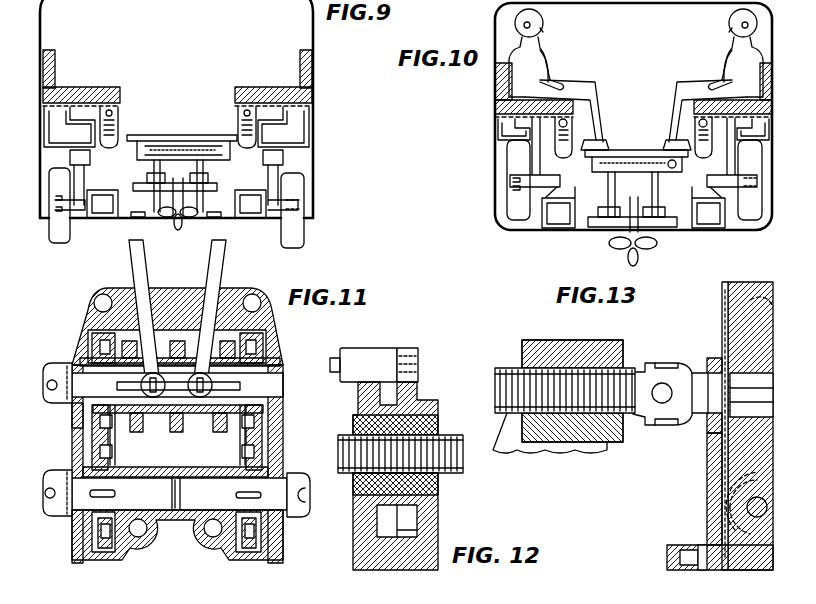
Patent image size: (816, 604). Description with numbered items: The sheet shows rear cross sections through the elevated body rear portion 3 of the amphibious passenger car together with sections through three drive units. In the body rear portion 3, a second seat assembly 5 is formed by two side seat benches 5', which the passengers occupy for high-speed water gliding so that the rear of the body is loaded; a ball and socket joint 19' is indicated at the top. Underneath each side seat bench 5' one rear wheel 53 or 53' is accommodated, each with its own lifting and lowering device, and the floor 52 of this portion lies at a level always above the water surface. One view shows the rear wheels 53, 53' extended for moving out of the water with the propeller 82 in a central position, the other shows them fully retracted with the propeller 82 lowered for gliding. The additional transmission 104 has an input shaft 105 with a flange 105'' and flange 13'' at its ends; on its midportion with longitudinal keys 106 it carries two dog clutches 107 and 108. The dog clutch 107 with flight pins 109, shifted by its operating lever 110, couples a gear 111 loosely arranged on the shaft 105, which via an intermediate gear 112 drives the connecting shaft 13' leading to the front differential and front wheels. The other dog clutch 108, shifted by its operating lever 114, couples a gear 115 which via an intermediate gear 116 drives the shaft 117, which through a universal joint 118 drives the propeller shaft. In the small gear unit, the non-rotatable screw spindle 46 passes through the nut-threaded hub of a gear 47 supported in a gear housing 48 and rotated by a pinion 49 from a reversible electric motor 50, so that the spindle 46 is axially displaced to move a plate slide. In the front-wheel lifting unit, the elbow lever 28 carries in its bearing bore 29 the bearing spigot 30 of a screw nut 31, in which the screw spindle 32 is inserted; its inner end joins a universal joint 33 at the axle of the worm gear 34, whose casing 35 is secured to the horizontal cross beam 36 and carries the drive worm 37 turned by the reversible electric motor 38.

In FIG. 10, the body rear portion 3 is at (648, 40).
In FIG. 9, the second seat assembly 5 is at (177, 58).
In FIG. 9, the side seat benches 5' is at (177, 80).
In FIG. 9, the ball and socket joint 19' is at (110, 9).
In FIG. 9, the floor 52 is at (180, 133).
In FIG. 10, the floor 52 is at (623, 147).
In FIG. 9, the rear wheel 53 is at (315, 215).
In FIG. 10, the rear wheel 53 is at (743, 201).
In FIG. 9, the rear wheel 53' is at (55, 226).
In FIG. 10, the rear wheel 53' is at (486, 187).
In FIG. 10, the propeller 82 is at (613, 240).
In FIG. 11, the additional transmission 104 is at (186, 284).
In FIG. 11, the input shaft 105 is at (177, 385).
In FIG. 11, the shaft flange 105'' is at (57, 399).
In FIG. 11, the longitudinal keys 106 is at (285, 386).
In FIG. 11, the dog clutch 107 is at (157, 418).
In FIG. 11, the dog clutch 108 is at (207, 418).
In FIG. 11, the flight pins 109 is at (124, 420).
In FIG. 11, the operating lever 110 is at (137, 262).
In FIG. 11, the gear 111 is at (90, 352).
In FIG. 11, the intermediate gear 112 is at (122, 547).
In FIG. 11, the operating lever 114 is at (228, 273).
In FIG. 11, the gear 115 is at (277, 332).
In FIG. 11, the intermediate gear 116 is at (262, 540).
In FIG. 11, the shaft 117 is at (223, 505).
In FIG. 11, the universal joint 118 is at (294, 470).
In FIG. 11, the connecting shaft 13' is at (57, 515).
In FIG. 11, the flange 13'' is at (59, 429).
In FIG. 12, the screw spindle 46 is at (341, 445).
In FIG. 12, the gear 47 is at (418, 390).
In FIG. 12, the gear housing 48 is at (430, 508).
In FIG. 12, the pinion 49 is at (417, 350).
In FIG. 12, the reversible electric motor 50 is at (380, 353).
In FIG. 13, the elbow lever 28 is at (512, 452).
In FIG. 13, the bearing bore 29 is at (605, 340).
In FIG. 13, the bearing spigot 30 is at (568, 444).
In FIG. 13, the screw nut 31 is at (538, 338).
In FIG. 13, the screw spindle 32 is at (492, 385).
In FIG. 13, the universal joint 33 is at (667, 363).
In FIG. 13, the worm gear 34 is at (743, 320).
In FIG. 13, the casing 35 is at (713, 448).
In FIG. 13, the horizontal cross beam 36 is at (667, 562).
In FIG. 13, the drive worm 37 is at (730, 513).
In FIG. 13, the electric motor 38 is at (722, 472).